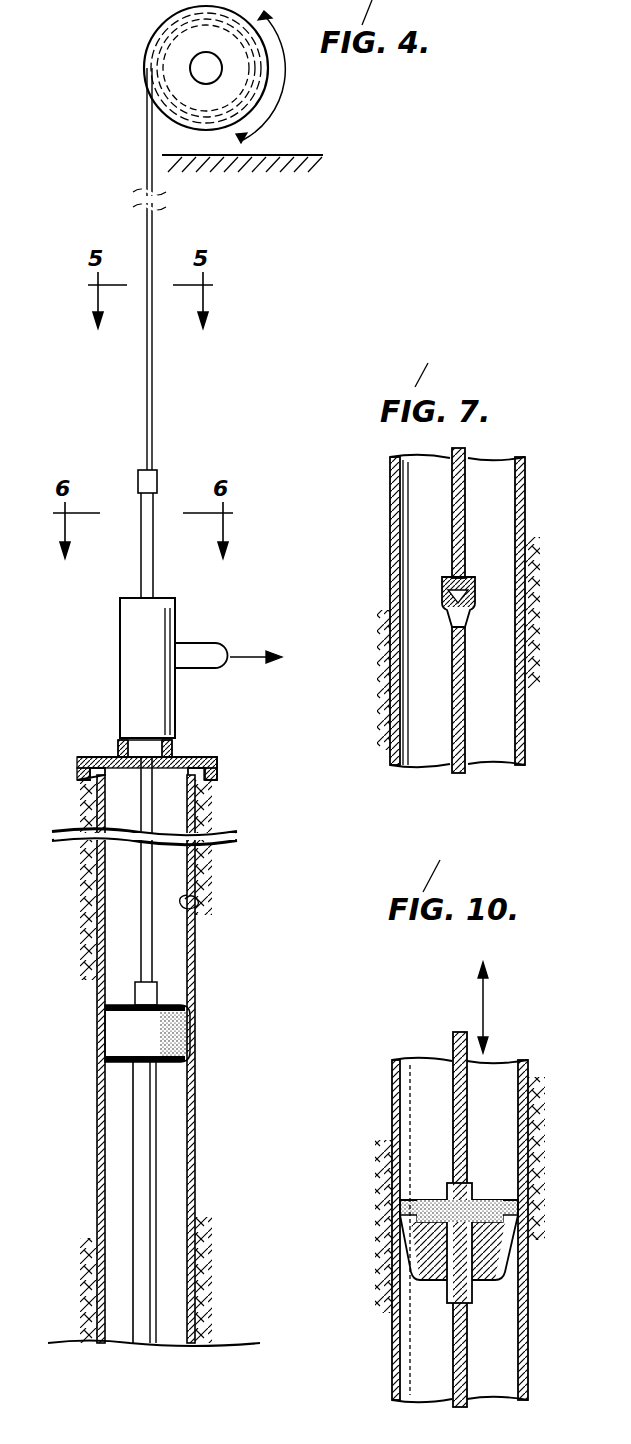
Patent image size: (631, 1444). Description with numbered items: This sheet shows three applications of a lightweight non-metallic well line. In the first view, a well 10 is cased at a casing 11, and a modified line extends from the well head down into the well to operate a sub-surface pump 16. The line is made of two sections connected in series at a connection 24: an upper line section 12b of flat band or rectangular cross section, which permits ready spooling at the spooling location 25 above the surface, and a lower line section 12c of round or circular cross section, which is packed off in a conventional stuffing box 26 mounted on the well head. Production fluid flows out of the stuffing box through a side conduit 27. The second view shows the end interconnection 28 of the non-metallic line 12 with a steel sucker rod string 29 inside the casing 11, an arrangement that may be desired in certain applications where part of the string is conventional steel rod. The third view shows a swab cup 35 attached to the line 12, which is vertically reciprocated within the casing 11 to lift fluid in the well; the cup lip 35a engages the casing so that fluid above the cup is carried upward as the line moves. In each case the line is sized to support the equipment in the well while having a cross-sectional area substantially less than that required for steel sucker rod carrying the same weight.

In FIG. 4, the spooling location 25 is at (120, 65).
In FIG. 4, the line section 12b is at (145, 158).
In FIG. 4, the series connection 24 is at (138, 478).
In FIG. 4, the line section 12c is at (153, 580).
In FIG. 4, the stuffing box 26 is at (130, 687).
In FIG. 4, the side conduit 27 is at (207, 660).
In FIG. 4, the casing 11 is at (195, 1123).
In FIG. 7, the casing 11 is at (525, 505).
In FIG. 10, the casing 11 is at (392, 1097).
In FIG. 4, the well 10 is at (196, 905).
In FIG. 4, the sub-surface pump 16 is at (122, 1131).
In FIG. 7, the line 12 is at (458, 500).
In FIG. 10, the line 12 is at (467, 1360).
In FIG. 7, the end interconnection 28 is at (492, 589).
In FIG. 7, the steel sucker rod string 29 is at (464, 715).
In FIG. 10, the swab cup 35 is at (395, 1260).
In FIG. 10, the cup lip 35a is at (517, 1205).